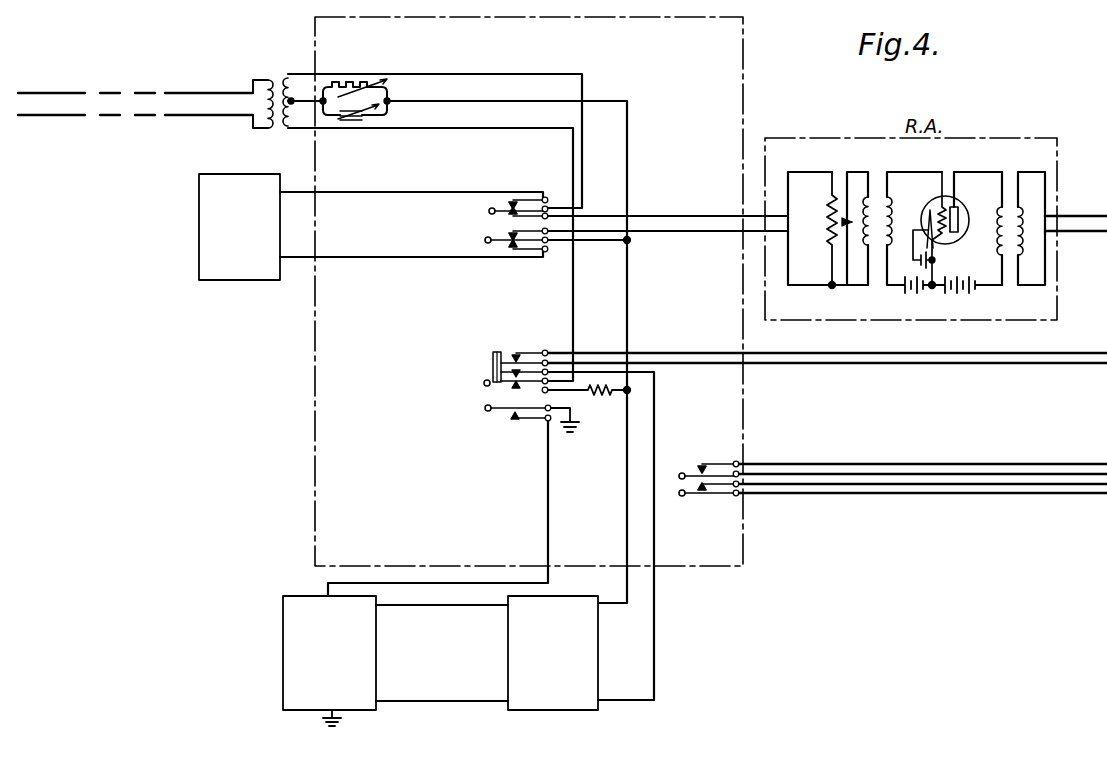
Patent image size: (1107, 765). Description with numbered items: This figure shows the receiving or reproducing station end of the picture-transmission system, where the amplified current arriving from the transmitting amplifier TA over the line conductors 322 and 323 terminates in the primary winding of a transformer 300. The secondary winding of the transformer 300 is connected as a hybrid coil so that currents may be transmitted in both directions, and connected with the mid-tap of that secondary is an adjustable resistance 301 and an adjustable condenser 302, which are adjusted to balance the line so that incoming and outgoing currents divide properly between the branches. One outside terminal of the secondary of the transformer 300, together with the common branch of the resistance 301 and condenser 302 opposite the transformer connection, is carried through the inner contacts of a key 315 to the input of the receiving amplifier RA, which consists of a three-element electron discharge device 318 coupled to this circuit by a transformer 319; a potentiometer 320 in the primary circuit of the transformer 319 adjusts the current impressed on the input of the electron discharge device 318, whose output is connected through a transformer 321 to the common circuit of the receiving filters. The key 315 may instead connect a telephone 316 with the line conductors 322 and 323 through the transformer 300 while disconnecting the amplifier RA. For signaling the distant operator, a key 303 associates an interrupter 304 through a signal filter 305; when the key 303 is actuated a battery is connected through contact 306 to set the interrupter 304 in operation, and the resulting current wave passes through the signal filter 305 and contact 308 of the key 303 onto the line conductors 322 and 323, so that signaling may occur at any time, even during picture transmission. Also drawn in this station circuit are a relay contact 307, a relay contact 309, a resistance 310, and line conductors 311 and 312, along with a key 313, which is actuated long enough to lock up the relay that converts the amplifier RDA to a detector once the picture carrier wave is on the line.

The transformer 300 is at (279, 127).
The adjustable resistance 301 is at (360, 82).
The adjustable condenser 302 is at (360, 121).
The key 303 is at (496, 401).
The interrupter 304 is at (370, 708).
The signal filter 305 is at (600, 708).
The contact 306 is at (496, 419).
The relay contact 307 is at (522, 387).
The contact 308 is at (517, 362).
The relay contact 309 is at (514, 354).
The resistance 310 is at (588, 388).
The line conductor 311 is at (920, 352).
The line conductor 312 is at (920, 364).
The key 313 is at (690, 497).
The key 315 is at (498, 216).
The telephone 316 is at (228, 281).
The three-element electron discharge device 318 is at (937, 203).
The transformer 319 is at (879, 267).
The potentiometer 320 is at (830, 241).
The transformer 321 is at (1013, 189).
The line conductor 322 is at (44, 92).
The line conductor 323 is at (44, 116).